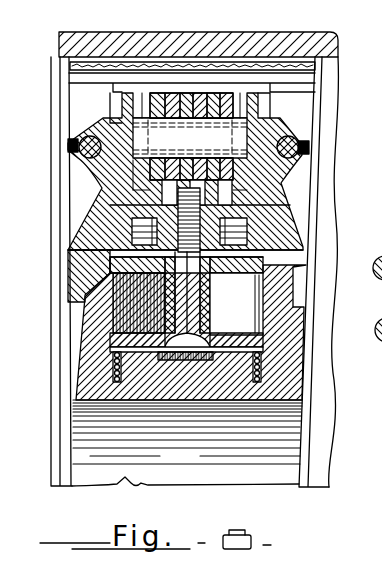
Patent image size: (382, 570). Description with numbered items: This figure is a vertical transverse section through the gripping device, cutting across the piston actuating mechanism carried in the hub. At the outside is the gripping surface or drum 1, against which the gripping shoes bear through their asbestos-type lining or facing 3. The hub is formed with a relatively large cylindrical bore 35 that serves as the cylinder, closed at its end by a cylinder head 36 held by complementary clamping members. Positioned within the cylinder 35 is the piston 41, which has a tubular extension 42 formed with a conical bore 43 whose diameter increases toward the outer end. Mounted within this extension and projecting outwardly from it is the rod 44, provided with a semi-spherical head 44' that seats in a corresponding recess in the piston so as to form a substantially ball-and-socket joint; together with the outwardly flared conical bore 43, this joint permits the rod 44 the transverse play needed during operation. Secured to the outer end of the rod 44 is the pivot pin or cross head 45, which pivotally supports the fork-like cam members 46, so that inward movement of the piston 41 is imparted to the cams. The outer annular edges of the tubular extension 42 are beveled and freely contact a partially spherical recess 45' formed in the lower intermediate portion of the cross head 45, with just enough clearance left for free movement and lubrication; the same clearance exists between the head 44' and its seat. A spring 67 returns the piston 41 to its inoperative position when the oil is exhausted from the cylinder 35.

The gripping surface or drum 1 is at (245, 46).
The lining or facing 3 is at (145, 66).
The cylindrical bore 35 is at (244, 318).
The cylinder head 36 is at (201, 262).
The piston 41 is at (262, 343).
The tubular extension 42 is at (211, 301).
The conical bore 43 is at (224, 250).
The rod 44 is at (99, 303).
The semi-spherical head 44' is at (186, 400).
The pivot pin or cross head 45 is at (85, 234).
The partially spherical recess 45' is at (296, 208).
The cam member 46 is at (130, 197).
The spring 67 is at (262, 378).